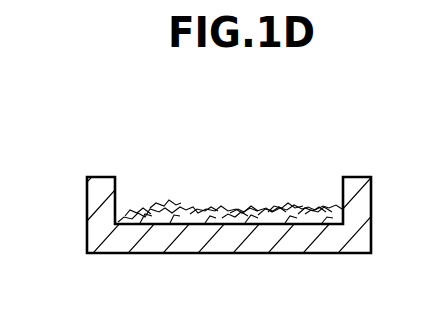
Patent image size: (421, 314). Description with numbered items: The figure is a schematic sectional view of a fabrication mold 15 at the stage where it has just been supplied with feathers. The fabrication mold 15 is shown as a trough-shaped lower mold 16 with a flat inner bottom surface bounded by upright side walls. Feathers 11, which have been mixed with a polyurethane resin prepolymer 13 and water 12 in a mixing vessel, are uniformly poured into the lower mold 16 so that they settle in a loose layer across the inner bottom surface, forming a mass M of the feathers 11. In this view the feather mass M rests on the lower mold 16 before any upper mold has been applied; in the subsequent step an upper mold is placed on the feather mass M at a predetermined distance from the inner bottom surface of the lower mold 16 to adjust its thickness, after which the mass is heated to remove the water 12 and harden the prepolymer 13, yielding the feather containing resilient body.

The fabrication mold 15 is at (88, 215).
The lower mold 16 is at (145, 242).
The feather mass M is at (164, 195).
The feathers 11 is at (228, 213).
The water 12 is at (263, 208).
The prepolymer 13 is at (302, 207).